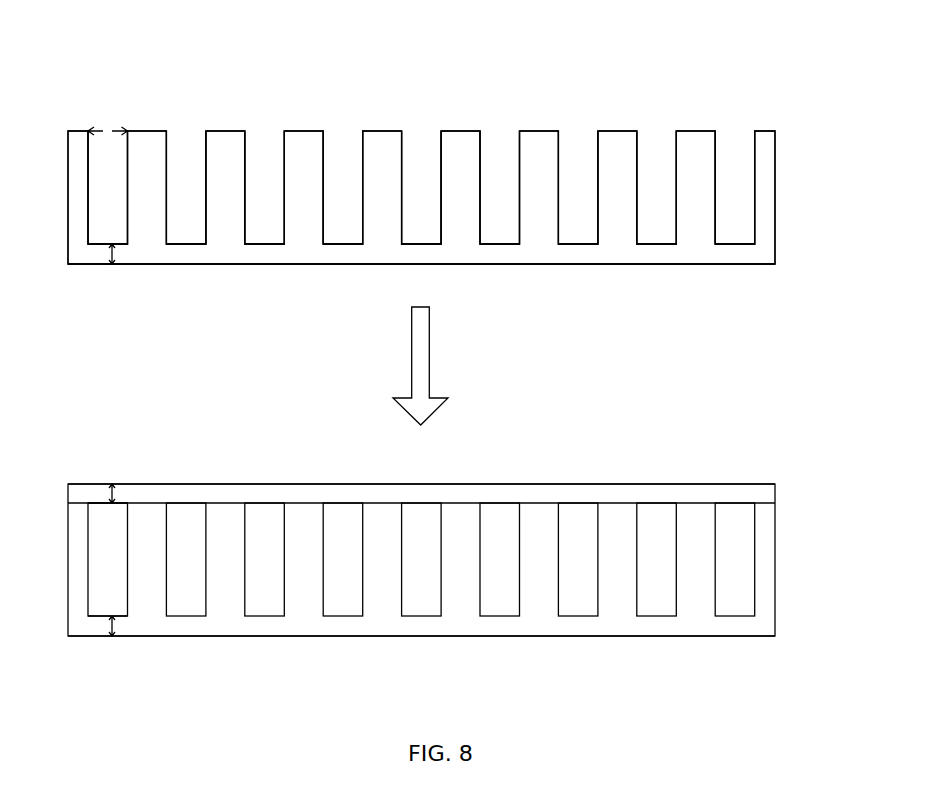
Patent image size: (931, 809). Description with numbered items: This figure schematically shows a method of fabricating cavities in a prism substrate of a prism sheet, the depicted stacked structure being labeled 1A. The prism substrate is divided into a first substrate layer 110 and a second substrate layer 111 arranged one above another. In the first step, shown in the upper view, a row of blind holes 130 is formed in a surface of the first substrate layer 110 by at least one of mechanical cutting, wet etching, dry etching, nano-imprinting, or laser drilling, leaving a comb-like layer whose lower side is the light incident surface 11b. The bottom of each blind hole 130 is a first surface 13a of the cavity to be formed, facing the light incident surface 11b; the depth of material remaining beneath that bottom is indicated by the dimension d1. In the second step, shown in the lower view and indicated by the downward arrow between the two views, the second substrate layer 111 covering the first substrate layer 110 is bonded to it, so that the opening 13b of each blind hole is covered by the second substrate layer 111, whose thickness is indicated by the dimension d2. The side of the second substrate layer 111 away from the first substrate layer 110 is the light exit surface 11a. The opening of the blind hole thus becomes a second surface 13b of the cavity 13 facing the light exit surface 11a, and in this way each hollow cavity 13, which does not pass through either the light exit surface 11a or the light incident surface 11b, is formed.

The stacked structure 1A is at (108, 19).
The first substrate layer 110 is at (763, 189).
The blind hole 130 is at (409, 187).
The cavity 13 is at (408, 558).
The first surface of the cavity 13a is at (100, 244).
The second surface of the cavity 13b is at (107, 130).
The light exit surface 11a is at (578, 483).
The light incident surface 11b is at (752, 264).
The second substrate layer 111 is at (723, 500).
The distance d1 is at (128, 441).
The distance d2 is at (125, 495).